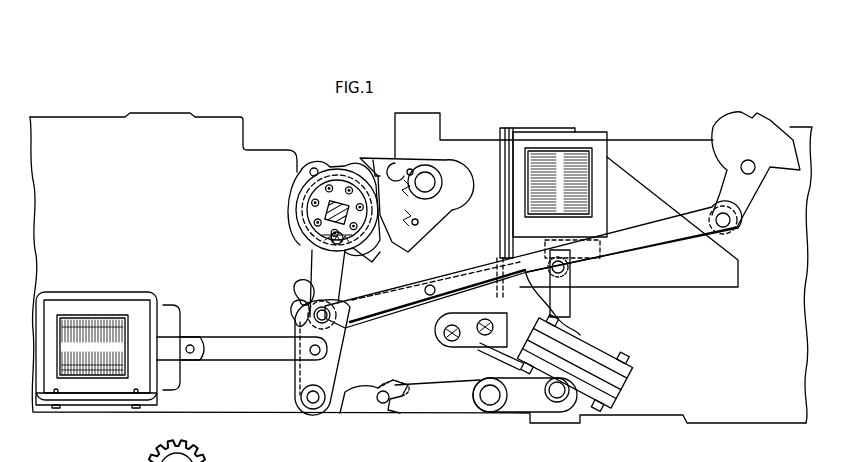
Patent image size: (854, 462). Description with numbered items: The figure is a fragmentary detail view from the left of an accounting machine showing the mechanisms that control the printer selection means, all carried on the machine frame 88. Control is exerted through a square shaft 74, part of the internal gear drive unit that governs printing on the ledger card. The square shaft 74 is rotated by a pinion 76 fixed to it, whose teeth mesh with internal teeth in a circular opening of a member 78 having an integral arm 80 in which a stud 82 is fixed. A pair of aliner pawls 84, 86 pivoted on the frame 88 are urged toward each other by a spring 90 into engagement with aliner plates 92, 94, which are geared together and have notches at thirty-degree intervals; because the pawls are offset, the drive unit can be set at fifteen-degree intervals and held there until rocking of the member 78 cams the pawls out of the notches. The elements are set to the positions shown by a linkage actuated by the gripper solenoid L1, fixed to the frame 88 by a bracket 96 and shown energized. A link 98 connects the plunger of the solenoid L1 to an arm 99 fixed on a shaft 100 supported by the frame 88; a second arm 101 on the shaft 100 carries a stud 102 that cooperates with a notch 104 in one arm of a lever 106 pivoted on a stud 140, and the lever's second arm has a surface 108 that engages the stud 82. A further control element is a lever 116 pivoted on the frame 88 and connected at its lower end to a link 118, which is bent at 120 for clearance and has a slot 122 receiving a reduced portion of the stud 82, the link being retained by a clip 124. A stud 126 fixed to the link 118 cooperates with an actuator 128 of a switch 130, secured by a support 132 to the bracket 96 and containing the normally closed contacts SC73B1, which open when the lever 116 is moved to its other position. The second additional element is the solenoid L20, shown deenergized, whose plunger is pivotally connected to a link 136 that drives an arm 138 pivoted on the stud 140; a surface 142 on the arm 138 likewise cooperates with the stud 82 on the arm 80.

The frame 88 is at (738, 410).
The solenoid L20 is at (86, 300).
The gripper solenoid L1 is at (587, 140).
The link 136 is at (222, 352).
The clip 124 is at (292, 335).
The arm 138 is at (343, 338).
The stud 140 is at (313, 415).
The slot 122 is at (290, 316).
The surface 108 is at (305, 292).
The arm 80 is at (310, 273).
The stud 82 is at (347, 295).
The aliner plate 94 is at (372, 258).
The aliner plate 92 is at (348, 170).
The member 78 is at (298, 192).
The pinion 76 is at (307, 227).
The square shaft 74 is at (310, 240).
The spring 90 is at (384, 160).
The aliner pawl 86 is at (430, 208).
The aliner pawl 84 is at (401, 170).
The bend 120 is at (420, 282).
The surface 142 is at (357, 298).
The actuator 128 is at (447, 303).
The link 118 is at (670, 250).
The stud 126 is at (450, 265).
The lever 116 is at (755, 118).
The bracket 96 is at (727, 273).
The link 98 is at (570, 296).
The switch 130 is at (617, 382).
The contacts SC73B1 is at (637, 366).
The support 132 is at (470, 335).
The arm 99 is at (533, 396).
The shaft 100 is at (492, 404).
The second arm 101 is at (443, 402).
The lever 106 is at (355, 402).
The notch 104 is at (417, 373).
The stud 102 is at (387, 410).